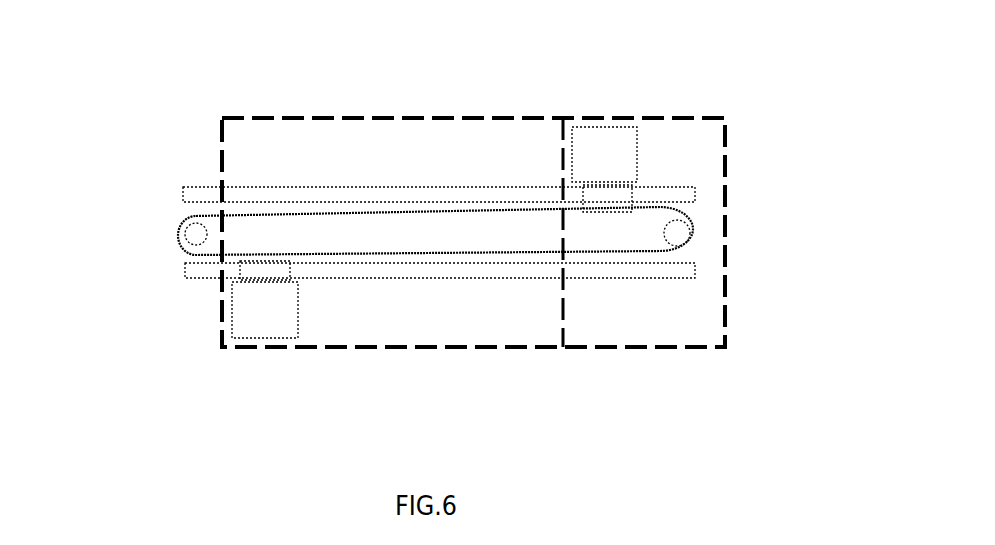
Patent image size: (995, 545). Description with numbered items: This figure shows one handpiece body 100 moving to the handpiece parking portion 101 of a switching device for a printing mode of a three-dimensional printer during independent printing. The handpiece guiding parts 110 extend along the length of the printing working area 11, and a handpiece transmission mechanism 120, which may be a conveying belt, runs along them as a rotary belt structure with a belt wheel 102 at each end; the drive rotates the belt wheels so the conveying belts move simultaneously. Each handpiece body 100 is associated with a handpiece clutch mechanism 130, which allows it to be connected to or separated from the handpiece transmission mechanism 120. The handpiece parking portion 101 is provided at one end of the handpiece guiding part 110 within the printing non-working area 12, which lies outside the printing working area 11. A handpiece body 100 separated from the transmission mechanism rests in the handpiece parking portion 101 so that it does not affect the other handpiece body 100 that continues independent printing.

The printing working area 11 is at (222, 104).
The printing non-working area 12 is at (727, 349).
The handpiece body 100 is at (608, 152).
The handpiece parking portion 101 is at (667, 193).
The belt wheel 102 is at (197, 235).
The handpiece guiding part 110 is at (367, 197).
The handpiece transmission mechanism 120 is at (513, 250).
The handpiece clutch mechanism 130 is at (623, 200).